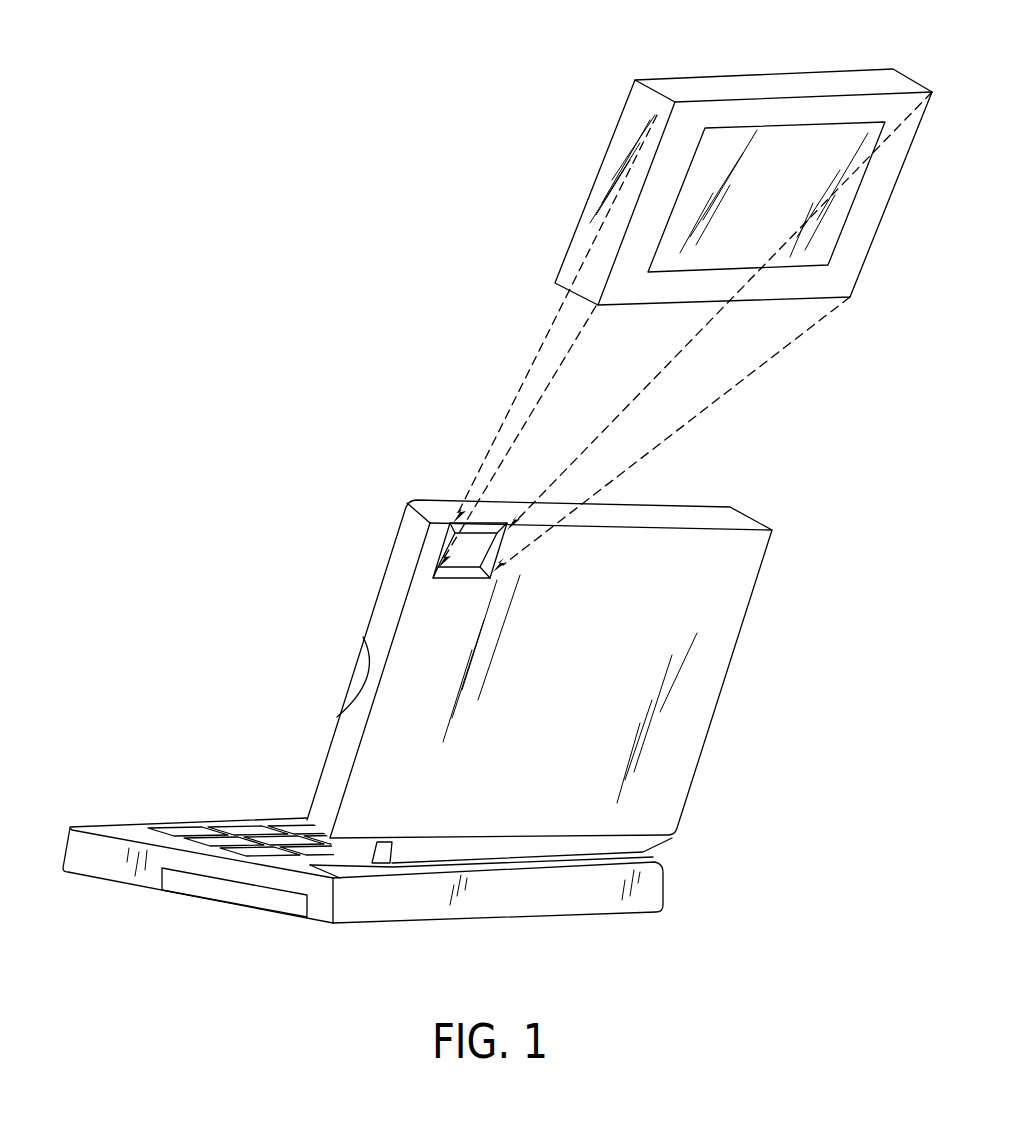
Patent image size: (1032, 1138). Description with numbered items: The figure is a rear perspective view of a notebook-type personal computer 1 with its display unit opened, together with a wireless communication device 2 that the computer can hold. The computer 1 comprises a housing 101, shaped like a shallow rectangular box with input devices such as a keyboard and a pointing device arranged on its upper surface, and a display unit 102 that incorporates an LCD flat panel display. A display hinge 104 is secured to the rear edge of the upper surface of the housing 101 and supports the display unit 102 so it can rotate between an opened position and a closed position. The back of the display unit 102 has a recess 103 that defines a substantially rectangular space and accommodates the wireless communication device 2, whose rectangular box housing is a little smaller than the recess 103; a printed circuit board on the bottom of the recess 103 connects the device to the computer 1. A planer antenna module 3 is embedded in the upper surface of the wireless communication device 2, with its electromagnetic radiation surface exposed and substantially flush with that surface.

The notebook-type personal computer 1 is at (172, 785).
The wireless communication device 2 is at (743, 162).
The planer antenna module 3 is at (828, 235).
The housing 101 is at (661, 890).
The display unit 102 is at (698, 728).
The recess 103 is at (440, 578).
The display hinge 104 is at (635, 851).